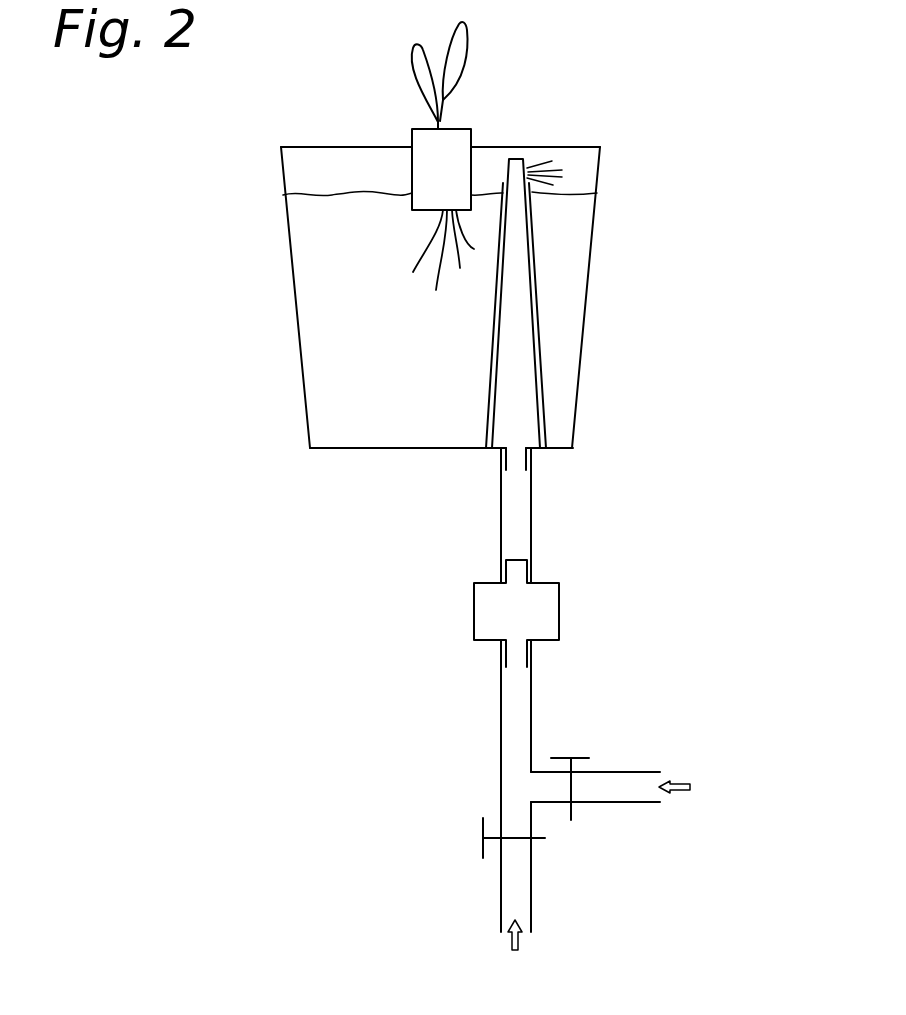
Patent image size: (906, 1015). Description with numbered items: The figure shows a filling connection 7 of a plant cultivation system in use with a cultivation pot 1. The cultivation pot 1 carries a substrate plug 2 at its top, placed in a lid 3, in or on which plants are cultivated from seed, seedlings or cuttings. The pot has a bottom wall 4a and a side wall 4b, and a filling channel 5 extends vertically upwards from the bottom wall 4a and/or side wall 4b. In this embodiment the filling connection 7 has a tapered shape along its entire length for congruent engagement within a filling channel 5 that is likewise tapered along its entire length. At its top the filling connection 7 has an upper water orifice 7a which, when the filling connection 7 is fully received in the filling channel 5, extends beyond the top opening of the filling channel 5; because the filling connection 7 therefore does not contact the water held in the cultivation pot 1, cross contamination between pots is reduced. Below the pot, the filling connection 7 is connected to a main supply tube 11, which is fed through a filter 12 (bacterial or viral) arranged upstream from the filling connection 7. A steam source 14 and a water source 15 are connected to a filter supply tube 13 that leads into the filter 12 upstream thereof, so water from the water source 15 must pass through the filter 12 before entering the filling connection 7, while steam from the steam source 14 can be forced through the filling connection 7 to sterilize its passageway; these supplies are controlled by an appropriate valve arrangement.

The cultivation pot 1 is at (604, 81).
The substrate plug 2 is at (418, 135).
The lid 3 is at (303, 147).
The bottom wall 4a is at (355, 448).
The side wall 4b is at (287, 235).
The filling channel 5 is at (538, 385).
The filling connection 7 is at (518, 337).
The upper water orifice 7a is at (526, 163).
The main supply tube 11 is at (531, 527).
The filter 12 is at (560, 612).
The filter supply tube 13 is at (531, 718).
The steam source 14 is at (627, 785).
The water source 15 is at (523, 887).